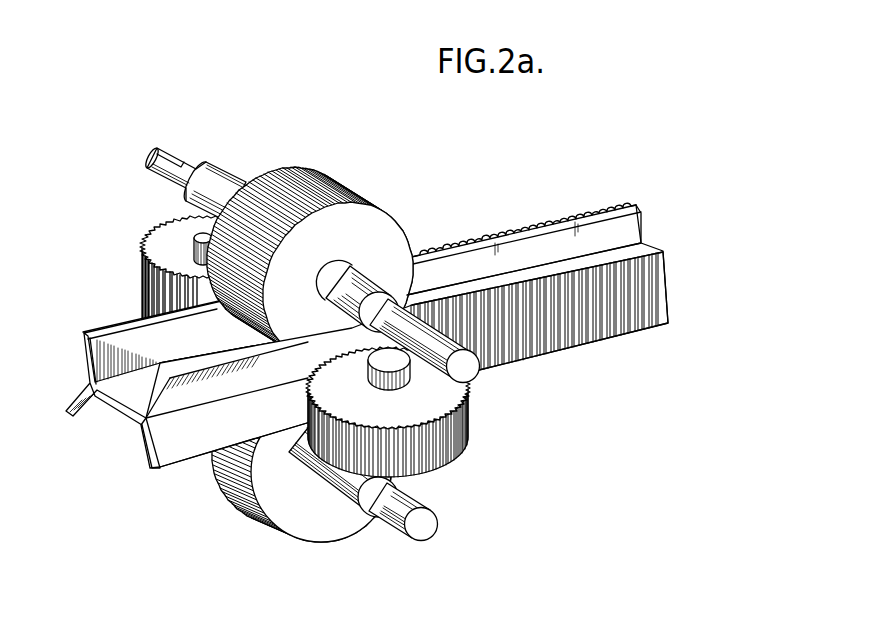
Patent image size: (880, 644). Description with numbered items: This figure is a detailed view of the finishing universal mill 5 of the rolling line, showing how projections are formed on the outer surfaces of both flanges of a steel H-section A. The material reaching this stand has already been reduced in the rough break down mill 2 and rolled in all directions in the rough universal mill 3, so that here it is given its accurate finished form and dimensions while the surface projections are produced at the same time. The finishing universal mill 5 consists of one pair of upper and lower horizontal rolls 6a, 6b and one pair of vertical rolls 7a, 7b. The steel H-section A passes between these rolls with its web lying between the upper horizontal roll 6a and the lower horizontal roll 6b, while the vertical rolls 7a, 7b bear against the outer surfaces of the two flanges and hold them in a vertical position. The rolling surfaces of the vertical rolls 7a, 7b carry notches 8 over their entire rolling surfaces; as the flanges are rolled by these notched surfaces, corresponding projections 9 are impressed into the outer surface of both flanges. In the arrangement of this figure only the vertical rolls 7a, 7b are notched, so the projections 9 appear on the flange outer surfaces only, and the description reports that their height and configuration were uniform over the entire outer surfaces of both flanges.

The rough break down mill 2 is at (120, 404).
The rough universal mill 3 is at (157, 468).
The steel H-section A is at (143, 444).
The finishing universal mill 5 is at (425, 487).
The upper horizontal roll 6a is at (336, 176).
The lower horizontal roll 6b is at (243, 490).
The vertical roll 7a is at (167, 237).
The vertical roll 7b is at (443, 400).
The notches 8 is at (143, 283).
The projections 9 is at (533, 226).